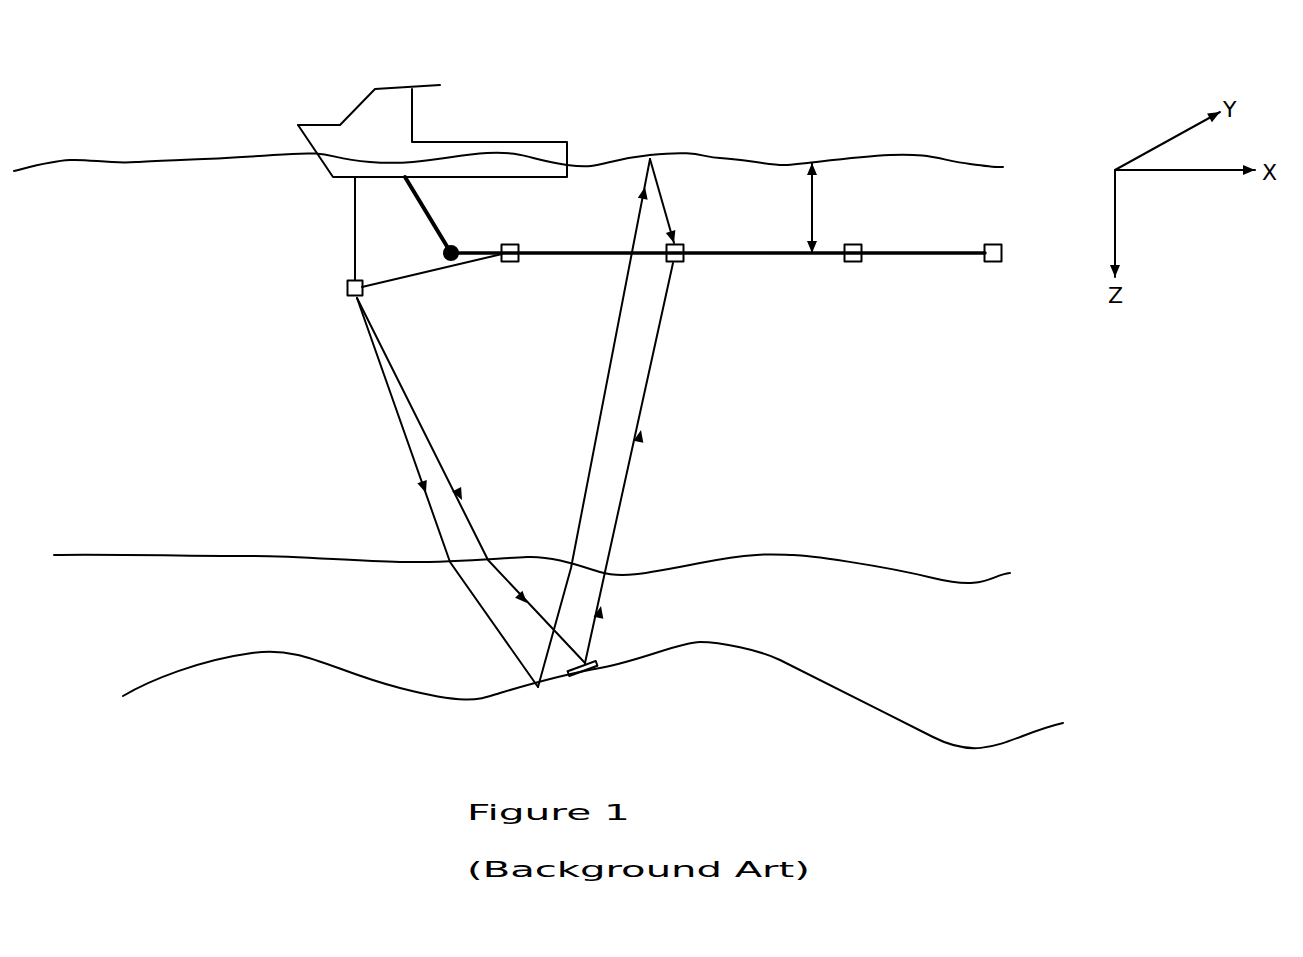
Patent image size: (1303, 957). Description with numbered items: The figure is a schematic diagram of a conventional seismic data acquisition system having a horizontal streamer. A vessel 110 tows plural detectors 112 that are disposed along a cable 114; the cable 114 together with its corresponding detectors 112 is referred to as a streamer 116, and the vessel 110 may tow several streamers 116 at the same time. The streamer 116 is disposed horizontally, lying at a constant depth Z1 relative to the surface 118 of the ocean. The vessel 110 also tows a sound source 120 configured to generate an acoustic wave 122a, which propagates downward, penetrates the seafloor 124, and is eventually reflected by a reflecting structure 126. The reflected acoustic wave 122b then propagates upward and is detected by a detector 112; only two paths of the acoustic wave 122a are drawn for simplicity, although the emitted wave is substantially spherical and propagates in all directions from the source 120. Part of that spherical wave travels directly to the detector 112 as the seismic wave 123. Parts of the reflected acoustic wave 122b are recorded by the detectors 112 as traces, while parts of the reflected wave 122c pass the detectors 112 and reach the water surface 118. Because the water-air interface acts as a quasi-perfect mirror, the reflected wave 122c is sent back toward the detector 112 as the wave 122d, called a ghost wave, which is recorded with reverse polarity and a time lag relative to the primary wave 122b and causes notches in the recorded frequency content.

The vessel 110 is at (358, 120).
The detectors 112 is at (508, 262).
The cable 114 is at (488, 256).
The streamer 116 is at (530, 342).
The surface of the ocean 118 is at (700, 157).
The sound source 120 is at (347, 288).
The acoustic wave 122a is at (410, 405).
The reflected acoustic wave 122b is at (630, 498).
The reflected wave 122c is at (597, 435).
The ghost wave 122d is at (667, 197).
The seismic wave 123 is at (410, 275).
The seafloor 124 is at (848, 557).
The reflecting structure 126 is at (587, 673).
The constant depth Z1 is at (812, 208).